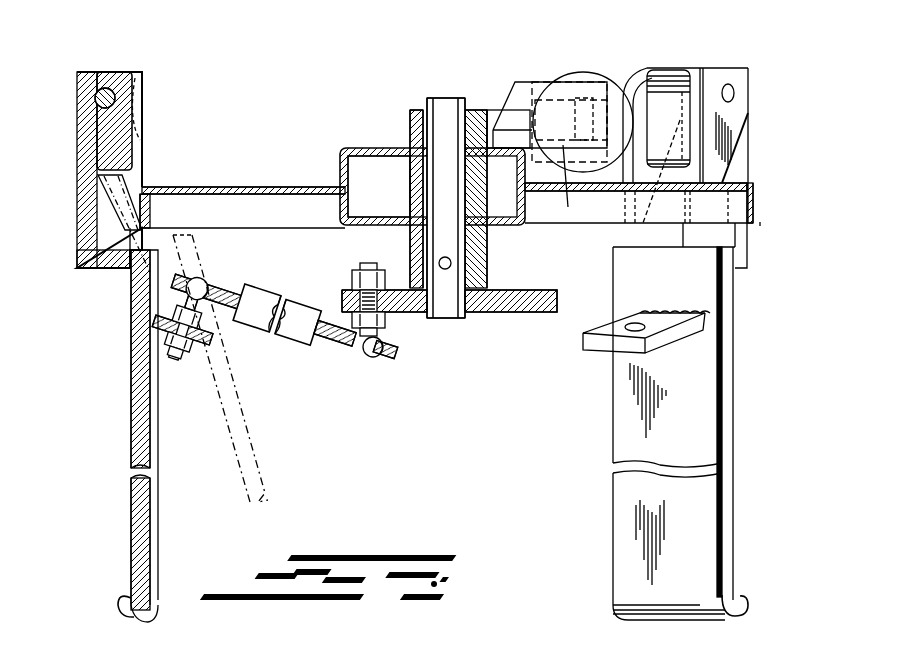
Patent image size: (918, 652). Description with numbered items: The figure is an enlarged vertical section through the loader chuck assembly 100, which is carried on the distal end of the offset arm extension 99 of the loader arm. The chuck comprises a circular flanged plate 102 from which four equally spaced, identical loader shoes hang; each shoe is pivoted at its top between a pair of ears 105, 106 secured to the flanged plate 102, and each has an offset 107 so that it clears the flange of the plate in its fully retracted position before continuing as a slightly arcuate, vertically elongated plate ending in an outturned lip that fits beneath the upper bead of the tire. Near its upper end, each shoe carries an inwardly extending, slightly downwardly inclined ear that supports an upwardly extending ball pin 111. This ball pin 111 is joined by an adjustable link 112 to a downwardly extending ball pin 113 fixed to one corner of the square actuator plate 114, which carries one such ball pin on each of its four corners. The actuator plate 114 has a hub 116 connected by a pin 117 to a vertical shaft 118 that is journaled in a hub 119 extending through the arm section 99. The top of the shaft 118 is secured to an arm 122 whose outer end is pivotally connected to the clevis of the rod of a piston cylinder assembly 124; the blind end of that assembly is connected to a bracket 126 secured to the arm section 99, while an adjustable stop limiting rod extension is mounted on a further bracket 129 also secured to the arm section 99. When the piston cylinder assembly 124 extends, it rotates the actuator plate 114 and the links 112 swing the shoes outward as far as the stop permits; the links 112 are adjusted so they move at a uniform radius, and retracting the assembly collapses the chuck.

The offset arm extension 99 is at (368, 148).
The loader chuck assembly 100 is at (758, 208).
The circular flanged plate 102 is at (282, 187).
The ear 105 is at (633, 88).
The ear 106 is at (736, 75).
The offset 107 is at (108, 272).
The ball pin 111 is at (216, 278).
The adjustable link 112 is at (323, 308).
The ball pin 113 is at (368, 357).
The square actuator plate 114 is at (531, 313).
The hub 116 is at (487, 253).
The pin 117 is at (452, 264).
The vertical shaft 118 is at (448, 320).
The hub 119 is at (410, 192).
The arm 122 is at (493, 112).
The piston cylinder assembly 124 is at (586, 73).
The bracket 126 is at (516, 82).
The bracket 129 is at (570, 187).